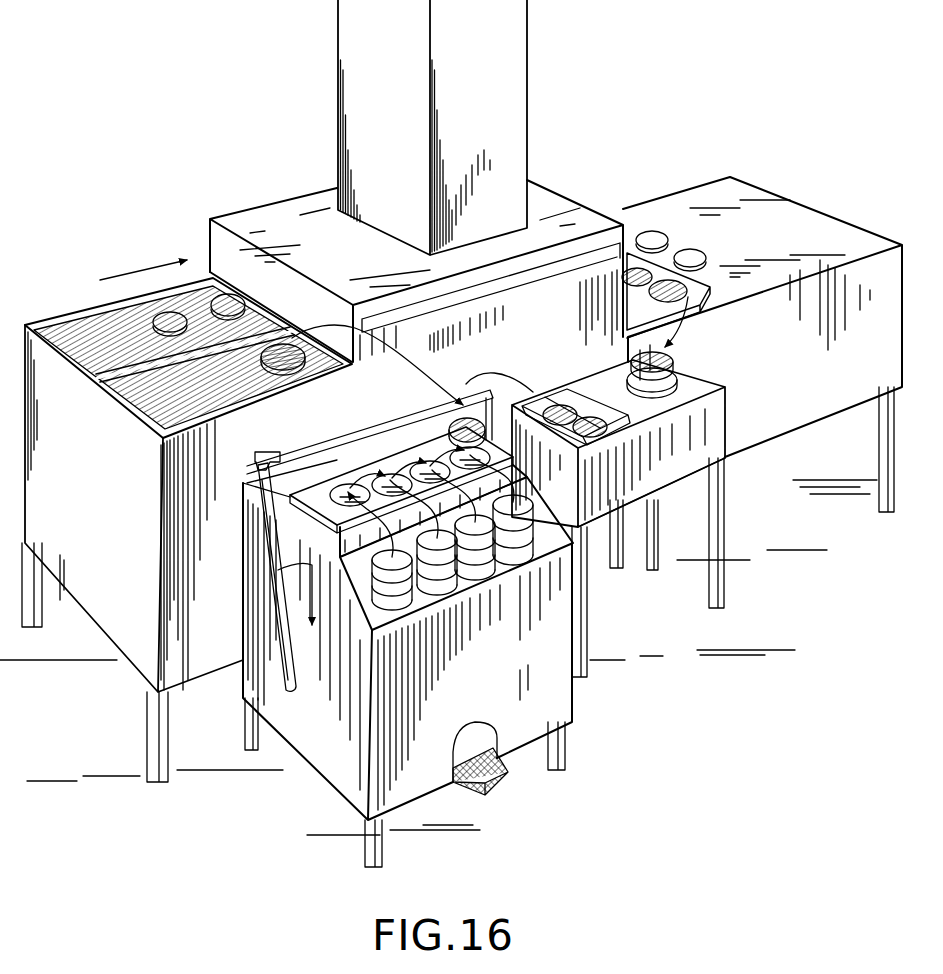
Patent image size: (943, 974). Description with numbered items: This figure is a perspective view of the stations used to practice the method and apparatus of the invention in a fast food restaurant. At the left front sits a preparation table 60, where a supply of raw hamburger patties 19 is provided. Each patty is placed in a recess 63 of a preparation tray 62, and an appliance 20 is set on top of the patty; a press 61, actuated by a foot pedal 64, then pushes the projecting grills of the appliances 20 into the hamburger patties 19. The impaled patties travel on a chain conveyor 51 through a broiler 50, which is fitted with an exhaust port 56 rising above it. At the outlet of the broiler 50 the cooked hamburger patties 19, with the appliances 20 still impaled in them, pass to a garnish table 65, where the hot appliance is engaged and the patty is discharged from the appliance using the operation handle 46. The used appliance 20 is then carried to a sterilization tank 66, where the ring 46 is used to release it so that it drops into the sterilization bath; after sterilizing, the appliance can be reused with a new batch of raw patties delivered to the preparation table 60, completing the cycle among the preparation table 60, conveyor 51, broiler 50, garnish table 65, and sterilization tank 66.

The exhaust port 56 is at (513, 58).
The broiler 50 is at (277, 213).
The chain conveyor 51 is at (93, 315).
The hamburger patties 19 is at (232, 306).
The appliance 20 is at (282, 338).
The press 61 is at (260, 478).
The preparation tray 62 is at (340, 557).
The recess 63 is at (360, 478).
The preparation table 60 is at (490, 668).
The foot pedal 64 is at (507, 783).
The operation handle 46 is at (673, 387).
The sterilization tank 66 is at (668, 448).
The garnish table 65 is at (797, 218).